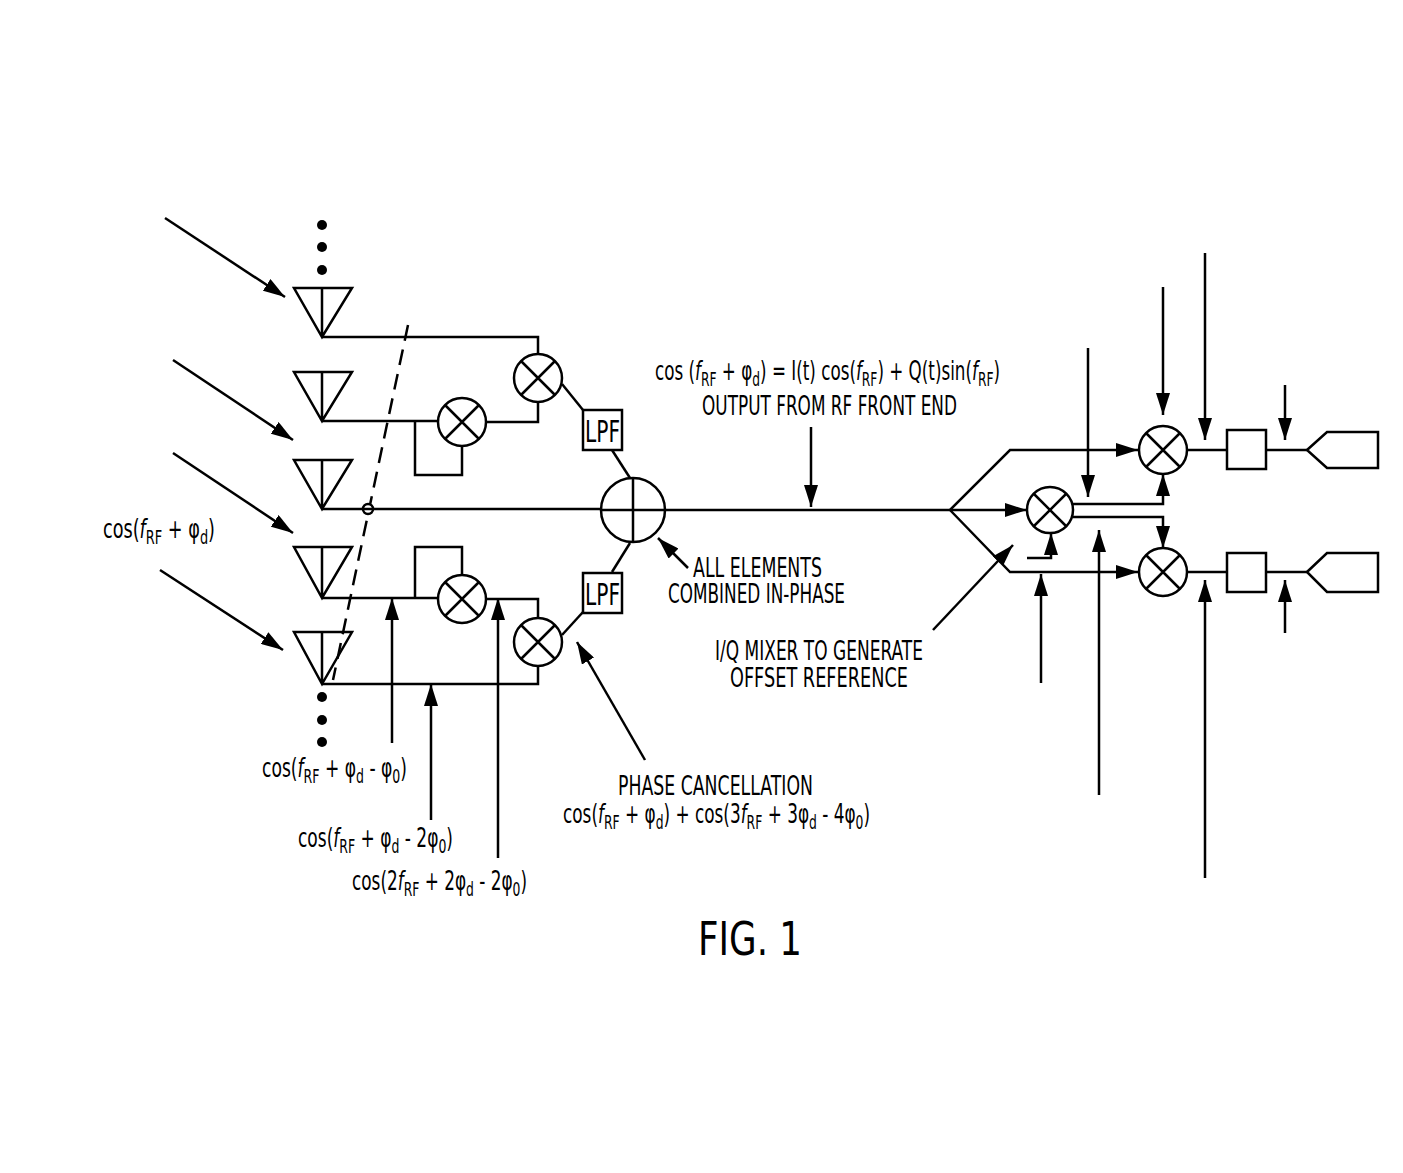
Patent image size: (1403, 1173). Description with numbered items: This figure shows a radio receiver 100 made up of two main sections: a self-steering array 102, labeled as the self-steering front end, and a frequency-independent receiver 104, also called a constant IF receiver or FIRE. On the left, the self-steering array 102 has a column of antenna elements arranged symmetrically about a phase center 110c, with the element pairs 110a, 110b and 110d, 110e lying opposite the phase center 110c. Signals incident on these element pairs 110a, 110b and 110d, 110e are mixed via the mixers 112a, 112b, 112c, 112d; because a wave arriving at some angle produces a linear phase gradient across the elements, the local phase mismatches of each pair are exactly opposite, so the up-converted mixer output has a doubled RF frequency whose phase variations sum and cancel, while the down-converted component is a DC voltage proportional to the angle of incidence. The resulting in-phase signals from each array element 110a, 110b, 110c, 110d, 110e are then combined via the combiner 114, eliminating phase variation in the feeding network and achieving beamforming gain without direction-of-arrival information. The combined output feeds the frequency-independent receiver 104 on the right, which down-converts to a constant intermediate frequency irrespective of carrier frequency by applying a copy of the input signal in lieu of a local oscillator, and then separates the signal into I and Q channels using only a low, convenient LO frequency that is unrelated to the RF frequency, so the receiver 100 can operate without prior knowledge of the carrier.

The receiver 100 is at (893, 183).
The self-steering array 102 is at (342, 192).
The frequency-independent receiver 104 is at (1327, 237).
The array element 110a is at (307, 317).
The array element 110b is at (302, 385).
The phase center 110c is at (302, 473).
The array element 110d is at (302, 565).
The array element 110e is at (307, 660).
The mixer 112a is at (543, 357).
The mixer 112b is at (464, 400).
The mixer 112c is at (469, 578).
The mixer 112d is at (546, 618).
The combiner 114 is at (647, 480).